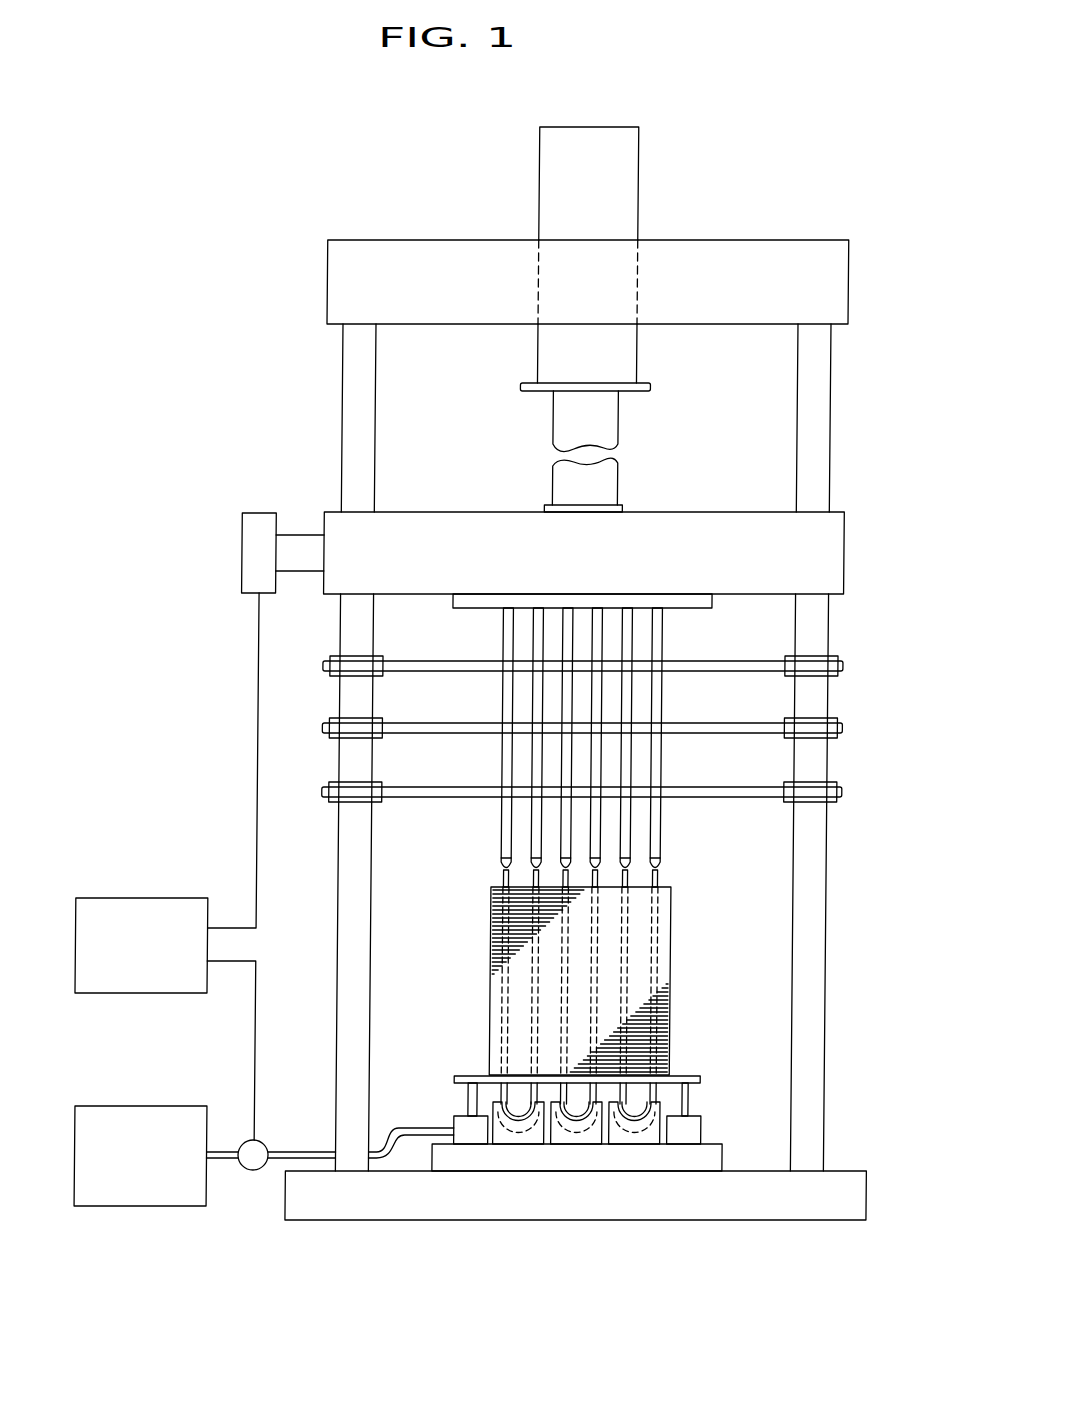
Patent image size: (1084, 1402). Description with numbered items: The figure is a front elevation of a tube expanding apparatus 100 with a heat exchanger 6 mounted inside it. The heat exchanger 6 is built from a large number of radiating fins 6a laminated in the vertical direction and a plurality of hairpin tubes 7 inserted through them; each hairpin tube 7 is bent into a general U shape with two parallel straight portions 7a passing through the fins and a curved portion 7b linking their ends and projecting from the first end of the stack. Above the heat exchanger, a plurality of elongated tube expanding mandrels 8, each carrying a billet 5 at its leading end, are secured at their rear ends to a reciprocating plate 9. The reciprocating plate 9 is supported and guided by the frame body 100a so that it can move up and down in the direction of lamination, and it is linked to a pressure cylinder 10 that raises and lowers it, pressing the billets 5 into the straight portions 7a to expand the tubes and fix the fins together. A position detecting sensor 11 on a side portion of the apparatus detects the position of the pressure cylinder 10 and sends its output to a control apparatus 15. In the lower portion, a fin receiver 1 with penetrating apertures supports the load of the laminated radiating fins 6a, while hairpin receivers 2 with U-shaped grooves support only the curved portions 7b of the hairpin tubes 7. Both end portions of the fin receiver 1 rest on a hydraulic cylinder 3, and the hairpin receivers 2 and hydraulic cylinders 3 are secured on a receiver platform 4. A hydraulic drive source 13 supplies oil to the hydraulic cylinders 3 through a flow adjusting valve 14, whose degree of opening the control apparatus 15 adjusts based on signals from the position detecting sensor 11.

The tube expanding apparatus 100 is at (434, 207).
The frame body 100a is at (831, 412).
The pressure cylinder 10 is at (637, 178).
The reciprocating plate 9 is at (846, 548).
The position detecting sensor 11 is at (244, 552).
The tube expanding mandrels 8 is at (665, 633).
The billet 5 is at (663, 866).
The hairpin tubes 7 is at (665, 880).
The heat exchanger 6 is at (676, 1005).
The radiating fins 6a is at (676, 940).
The straight portions 7a is at (496, 932).
The curved portion 7b is at (525, 1118).
The fin receiver 1 is at (707, 1079).
The hairpin receivers 2 is at (614, 1138).
The hydraulic cylinder 3 is at (461, 1118).
The receiver platform 4 is at (730, 1150).
The hydraulic drive source 13 is at (142, 1106).
The flow adjusting valve 14 is at (271, 1144).
The control apparatus 15 is at (142, 898).